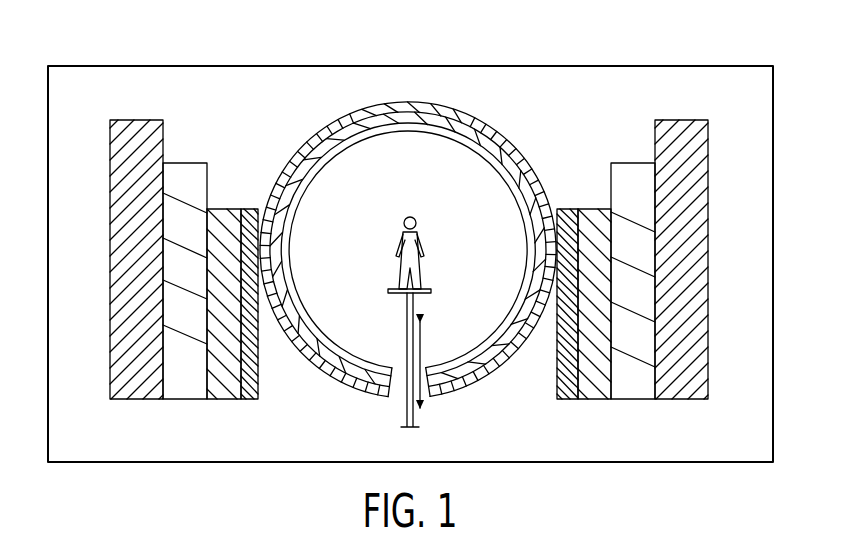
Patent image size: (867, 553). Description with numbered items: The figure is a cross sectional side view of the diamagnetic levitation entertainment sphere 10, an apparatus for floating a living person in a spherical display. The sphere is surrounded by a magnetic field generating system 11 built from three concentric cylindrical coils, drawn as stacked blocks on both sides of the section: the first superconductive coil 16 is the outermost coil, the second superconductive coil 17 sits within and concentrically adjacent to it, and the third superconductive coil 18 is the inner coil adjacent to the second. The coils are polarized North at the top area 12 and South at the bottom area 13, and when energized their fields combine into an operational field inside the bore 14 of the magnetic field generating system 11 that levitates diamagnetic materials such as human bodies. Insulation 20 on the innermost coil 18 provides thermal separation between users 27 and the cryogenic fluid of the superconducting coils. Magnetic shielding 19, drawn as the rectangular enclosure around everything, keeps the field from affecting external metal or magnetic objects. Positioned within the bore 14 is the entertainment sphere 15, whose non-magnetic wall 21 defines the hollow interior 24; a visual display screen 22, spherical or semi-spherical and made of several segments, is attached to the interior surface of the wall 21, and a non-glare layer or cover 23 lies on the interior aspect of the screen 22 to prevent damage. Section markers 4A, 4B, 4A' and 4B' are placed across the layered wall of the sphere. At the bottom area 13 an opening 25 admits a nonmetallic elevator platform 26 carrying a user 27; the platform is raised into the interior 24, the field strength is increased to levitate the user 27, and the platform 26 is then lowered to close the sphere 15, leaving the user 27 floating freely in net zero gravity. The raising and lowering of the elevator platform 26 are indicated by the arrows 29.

The diamagnetic levitation entertainment sphere 10 is at (281, 57).
The magnetic field generating system 11 is at (363, 240).
The top area 12 is at (385, 234).
The bottom area 13 is at (137, 415).
The bore 14 is at (283, 386).
The entertainment sphere 15 is at (399, 233).
The first superconductive coil 16 is at (409, 259).
The second superconductive coil 17 is at (409, 281).
The third superconductive coil 18 is at (409, 304).
The magnetic shielding 19 is at (530, 66).
The insulation 20 is at (408, 269).
The wall 21 is at (297, 153).
The visual display screen 22 is at (312, 152).
The non-glare layer or cover 23 is at (342, 147).
The hollow interior 24 is at (487, 300).
The opening 25 is at (425, 404).
The elevator platform 26 is at (430, 290).
The user 27 is at (397, 241).
The arrows 29 is at (424, 345).
The section line 4A is at (357, 111).
The section line 4B is at (486, 124).
The section line 4A' is at (375, 180).
The section line 4B' is at (447, 182).